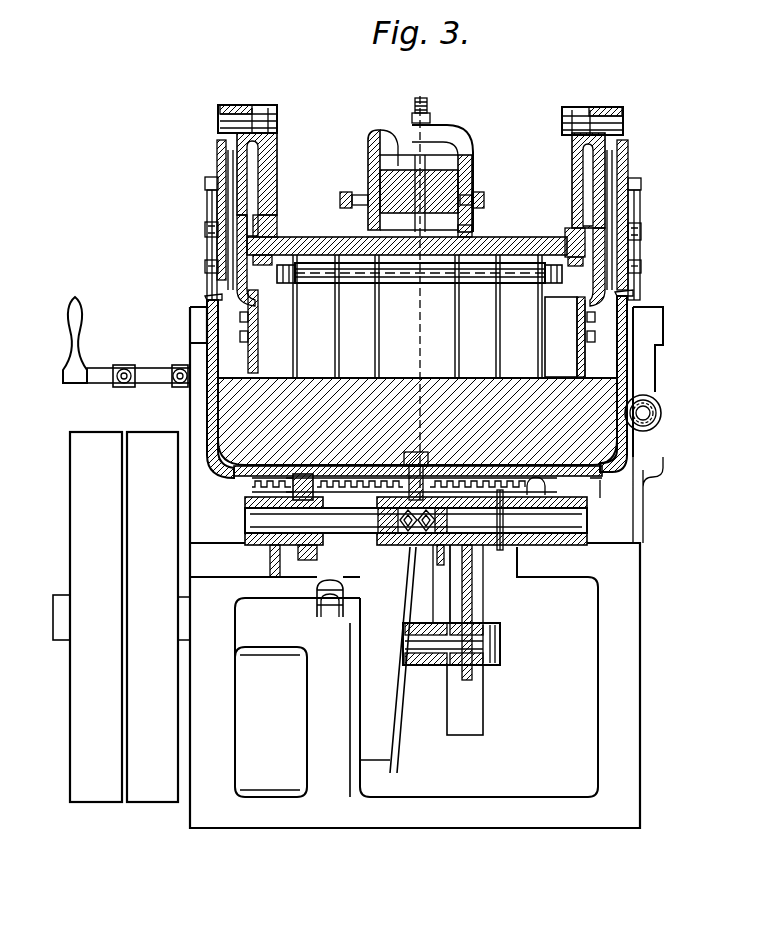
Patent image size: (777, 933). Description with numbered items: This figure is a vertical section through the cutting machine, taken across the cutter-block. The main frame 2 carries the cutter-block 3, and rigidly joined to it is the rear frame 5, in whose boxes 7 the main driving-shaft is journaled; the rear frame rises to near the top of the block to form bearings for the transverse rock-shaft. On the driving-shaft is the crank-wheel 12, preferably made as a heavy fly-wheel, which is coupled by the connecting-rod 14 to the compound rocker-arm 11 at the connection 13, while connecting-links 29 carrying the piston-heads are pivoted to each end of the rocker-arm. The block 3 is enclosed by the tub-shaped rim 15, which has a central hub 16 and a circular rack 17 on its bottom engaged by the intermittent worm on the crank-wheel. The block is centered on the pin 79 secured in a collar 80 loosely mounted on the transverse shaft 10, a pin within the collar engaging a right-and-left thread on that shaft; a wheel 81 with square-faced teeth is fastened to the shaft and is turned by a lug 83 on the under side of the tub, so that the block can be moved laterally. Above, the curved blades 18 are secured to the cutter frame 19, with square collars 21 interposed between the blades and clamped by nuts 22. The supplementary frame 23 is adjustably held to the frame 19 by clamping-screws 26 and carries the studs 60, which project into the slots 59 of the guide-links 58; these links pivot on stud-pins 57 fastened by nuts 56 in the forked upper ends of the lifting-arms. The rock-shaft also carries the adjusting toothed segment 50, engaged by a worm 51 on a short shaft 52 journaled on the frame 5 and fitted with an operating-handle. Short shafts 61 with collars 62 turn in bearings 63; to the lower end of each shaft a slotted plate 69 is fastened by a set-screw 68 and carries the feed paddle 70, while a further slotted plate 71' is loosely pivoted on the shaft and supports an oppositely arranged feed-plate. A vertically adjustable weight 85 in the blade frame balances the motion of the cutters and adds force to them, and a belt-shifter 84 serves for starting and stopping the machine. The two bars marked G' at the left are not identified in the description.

The main frame 2 is at (628, 563).
The cutter-block 3 is at (310, 390).
The rear frame 5 is at (313, 710).
The boxes 7 is at (331, 589).
The transverse shaft 10 is at (570, 522).
The compound rocker-arm 11 is at (478, 697).
The crank-wheel 12 is at (377, 758).
The rocker-arm connection 13 is at (500, 645).
The connecting-rod 14 is at (440, 573).
The rim 15 is at (206, 332).
The central hub 16 is at (405, 466).
The circular rack 17 is at (600, 501).
The curved blades 18 is at (297, 314).
The frame 19 is at (474, 235).
The square collars 21 is at (355, 296).
The nuts 22 is at (276, 279).
The supplementary frame 23 is at (472, 172).
The clamping-screws 26 is at (352, 206).
The connecting-links 29 is at (448, 131).
The adjusting toothed segment 50 is at (648, 370).
The worm 51 is at (660, 414).
The short shaft 52 is at (658, 404).
The nuts 56 is at (234, 110).
The stud-pins 57 is at (278, 122).
The links 58 is at (266, 172).
The slots 59 is at (264, 233).
The studs 60 is at (283, 240).
The short shafts 61 is at (205, 180).
The collars 62 is at (208, 205).
The bearings 63 is at (219, 152).
The set-screw 68 is at (206, 268).
The slotted plate 69 is at (598, 360).
The feed plate or paddle 70 is at (565, 337).
The pin 71' is at (499, 533).
The pin 79 is at (420, 458).
The collar 80 is at (380, 500).
The wheel 81 is at (318, 548).
The lug 83 is at (305, 474).
The belt-shifter 84 is at (124, 366).
The vertically-adjustable weight 85 is at (398, 148).
The bars G' is at (115, 617).